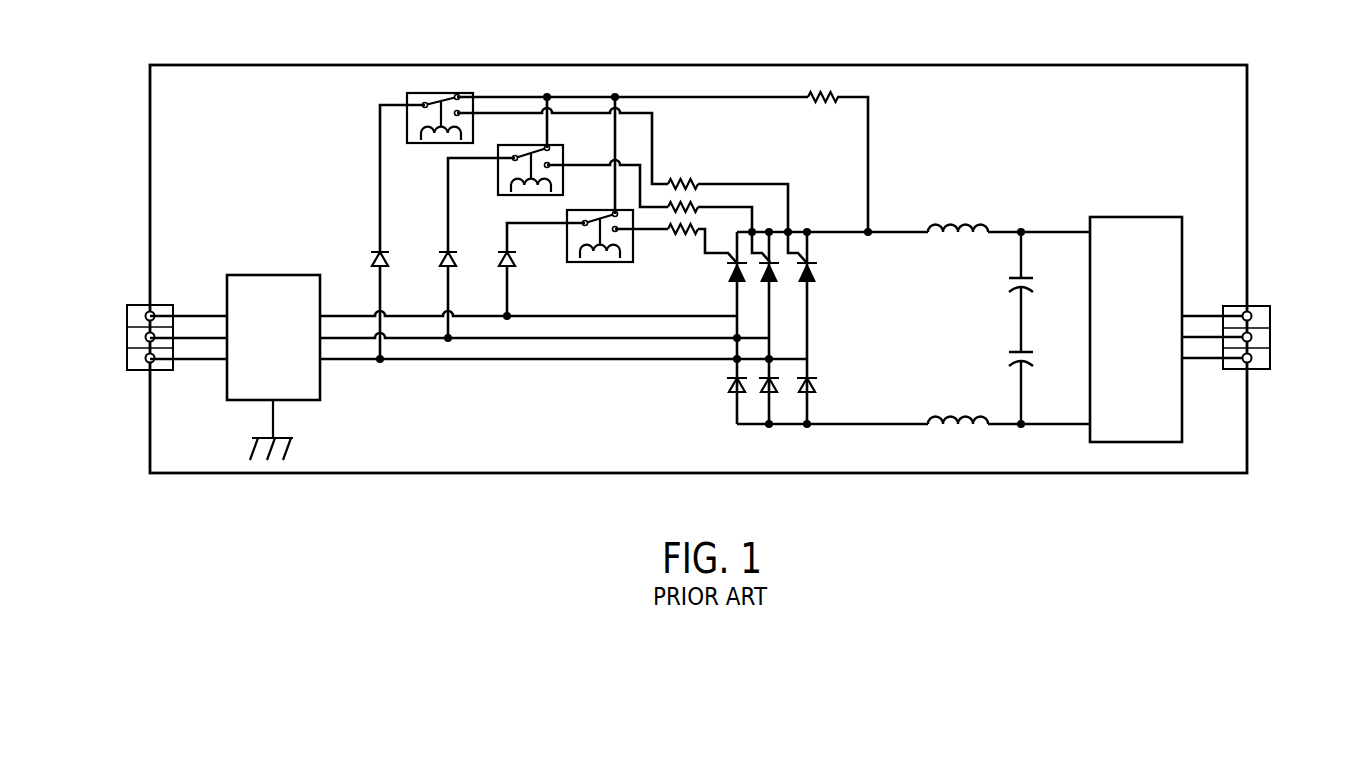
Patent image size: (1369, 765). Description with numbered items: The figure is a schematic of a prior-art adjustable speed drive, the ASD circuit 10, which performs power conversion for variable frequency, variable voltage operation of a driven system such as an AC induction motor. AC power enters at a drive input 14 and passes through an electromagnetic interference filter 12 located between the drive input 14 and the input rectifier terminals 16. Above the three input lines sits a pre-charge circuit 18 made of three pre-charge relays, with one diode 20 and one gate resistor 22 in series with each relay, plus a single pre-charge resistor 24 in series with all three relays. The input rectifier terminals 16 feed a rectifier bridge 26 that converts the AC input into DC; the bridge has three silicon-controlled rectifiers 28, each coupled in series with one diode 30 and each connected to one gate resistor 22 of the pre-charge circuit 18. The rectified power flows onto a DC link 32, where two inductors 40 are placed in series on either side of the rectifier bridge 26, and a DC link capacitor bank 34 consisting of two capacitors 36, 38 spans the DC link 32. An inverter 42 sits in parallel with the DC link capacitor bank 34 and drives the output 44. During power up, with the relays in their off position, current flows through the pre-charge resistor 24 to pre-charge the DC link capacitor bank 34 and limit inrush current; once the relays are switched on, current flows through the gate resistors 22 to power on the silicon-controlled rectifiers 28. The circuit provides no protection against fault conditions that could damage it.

The ASD circuit 10 is at (255, 65).
The electromagnetic interference filter 12 is at (273, 275).
The drive input 14 is at (140, 305).
The input rectifier terminals 16 is at (800, 359).
The pre-charge circuit 18 is at (568, 215).
The diode 20 is at (440, 260).
The gate resistor 22 is at (692, 229).
The pre-charge resistor 24 is at (825, 105).
The rectifier bridge 26 is at (770, 328).
The silicon-controlled rectifier 28 is at (807, 293).
The diode 30 is at (807, 393).
The DC link 32 is at (893, 233).
The DC link capacitor bank 34 is at (1010, 328).
The capacitor 36 is at (1030, 278).
The capacitor 38 is at (1030, 352).
The inductor 40 is at (965, 222).
The inverter 42 is at (1140, 217).
The output 44 is at (1258, 369).